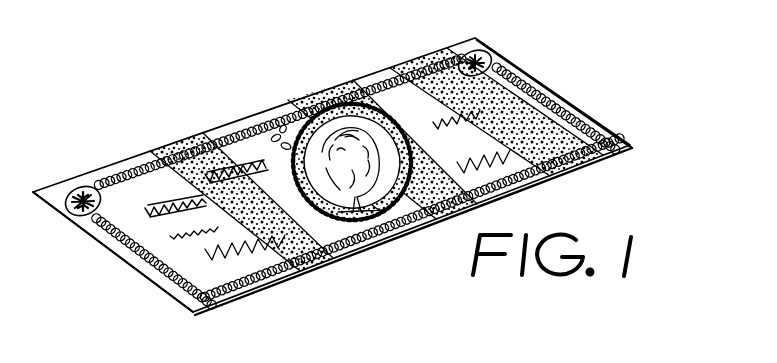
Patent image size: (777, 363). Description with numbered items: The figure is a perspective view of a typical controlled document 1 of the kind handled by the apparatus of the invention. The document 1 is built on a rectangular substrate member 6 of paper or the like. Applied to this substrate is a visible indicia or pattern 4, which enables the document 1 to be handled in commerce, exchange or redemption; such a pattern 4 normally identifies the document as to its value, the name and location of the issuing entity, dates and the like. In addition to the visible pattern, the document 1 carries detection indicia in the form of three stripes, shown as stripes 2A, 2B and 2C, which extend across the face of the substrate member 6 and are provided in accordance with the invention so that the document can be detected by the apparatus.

The controlled document 1 is at (125, 169).
The detection indicia stripe 2A is at (421, 61).
The detection indicia stripe 2B is at (308, 101).
The detection indicia stripe 2C is at (184, 148).
The visible indicia or pattern 4 is at (255, 170).
The rectangular substrate member 6 is at (135, 262).